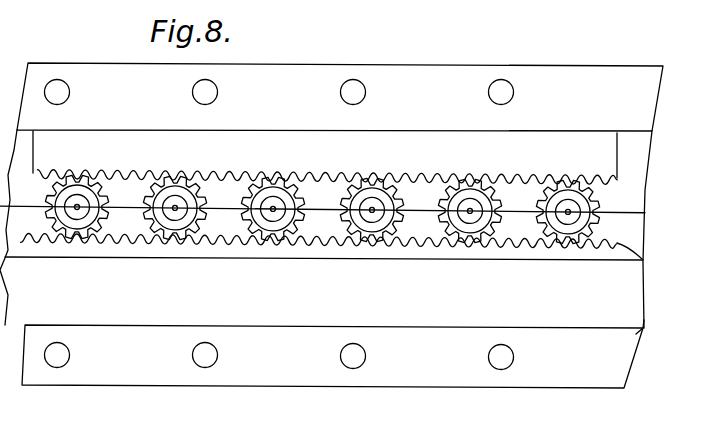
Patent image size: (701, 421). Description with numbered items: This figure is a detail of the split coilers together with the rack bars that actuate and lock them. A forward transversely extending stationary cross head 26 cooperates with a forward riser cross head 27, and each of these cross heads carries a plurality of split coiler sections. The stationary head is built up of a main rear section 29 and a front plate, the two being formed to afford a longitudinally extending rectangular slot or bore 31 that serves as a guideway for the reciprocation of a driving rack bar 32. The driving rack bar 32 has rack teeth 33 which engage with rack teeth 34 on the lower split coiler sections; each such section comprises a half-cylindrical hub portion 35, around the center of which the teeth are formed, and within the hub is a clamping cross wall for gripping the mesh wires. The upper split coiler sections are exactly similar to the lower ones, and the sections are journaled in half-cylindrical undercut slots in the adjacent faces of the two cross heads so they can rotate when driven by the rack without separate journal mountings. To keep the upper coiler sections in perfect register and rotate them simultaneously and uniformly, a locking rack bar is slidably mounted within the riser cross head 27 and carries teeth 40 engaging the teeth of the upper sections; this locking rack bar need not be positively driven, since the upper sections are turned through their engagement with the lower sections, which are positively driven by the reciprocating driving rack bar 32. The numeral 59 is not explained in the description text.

The forward stationary cross head 26 is at (336, 229).
The forward riser cross head 27 is at (349, 97).
The main rear section 29 is at (332, 356).
The rectangular slot or bore 31 is at (636, 333).
The driving rack bar 32 is at (324, 283).
The rack teeth 33 is at (617, 244).
The rack teeth 34 is at (610, 225).
The half-cylindrical hub portion 35 is at (568, 228).
The teeth 40 is at (492, 186).
The upper rack teeth 59 is at (327, 162).